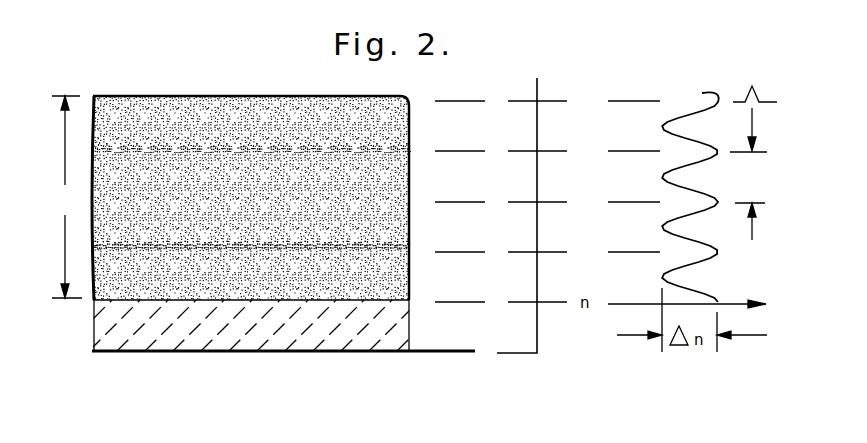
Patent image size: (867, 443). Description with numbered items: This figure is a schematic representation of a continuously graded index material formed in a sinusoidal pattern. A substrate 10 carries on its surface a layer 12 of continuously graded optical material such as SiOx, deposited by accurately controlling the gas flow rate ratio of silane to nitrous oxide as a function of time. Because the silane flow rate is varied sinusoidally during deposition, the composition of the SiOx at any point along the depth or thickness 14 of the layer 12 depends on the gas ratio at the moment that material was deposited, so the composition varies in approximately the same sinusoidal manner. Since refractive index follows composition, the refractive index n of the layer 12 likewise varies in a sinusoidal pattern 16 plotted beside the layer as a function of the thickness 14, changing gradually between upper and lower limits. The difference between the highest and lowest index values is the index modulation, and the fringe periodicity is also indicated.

The substrate 10 is at (262, 352).
The layer of continuously graded optical material 12 is at (213, 117).
The thickness 14 is at (67, 197).
The sinusoidal pattern 16 is at (690, 115).